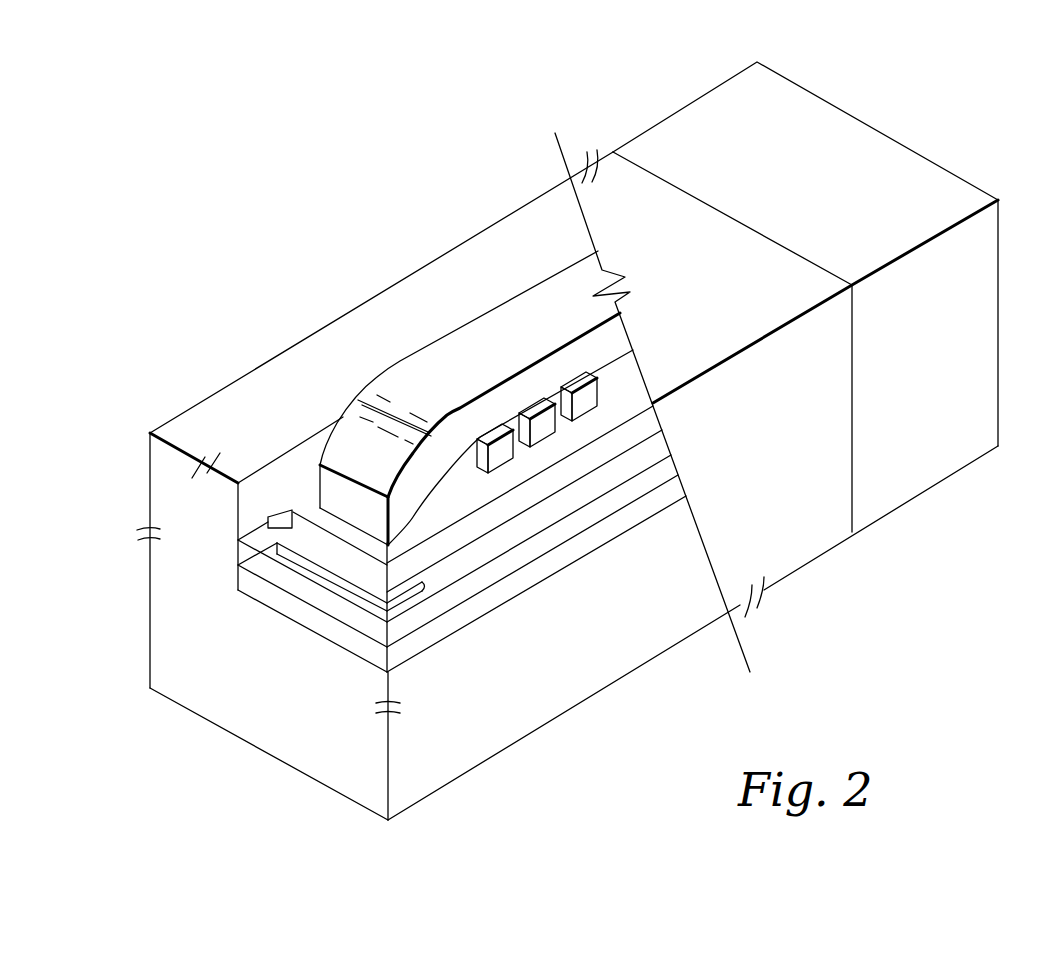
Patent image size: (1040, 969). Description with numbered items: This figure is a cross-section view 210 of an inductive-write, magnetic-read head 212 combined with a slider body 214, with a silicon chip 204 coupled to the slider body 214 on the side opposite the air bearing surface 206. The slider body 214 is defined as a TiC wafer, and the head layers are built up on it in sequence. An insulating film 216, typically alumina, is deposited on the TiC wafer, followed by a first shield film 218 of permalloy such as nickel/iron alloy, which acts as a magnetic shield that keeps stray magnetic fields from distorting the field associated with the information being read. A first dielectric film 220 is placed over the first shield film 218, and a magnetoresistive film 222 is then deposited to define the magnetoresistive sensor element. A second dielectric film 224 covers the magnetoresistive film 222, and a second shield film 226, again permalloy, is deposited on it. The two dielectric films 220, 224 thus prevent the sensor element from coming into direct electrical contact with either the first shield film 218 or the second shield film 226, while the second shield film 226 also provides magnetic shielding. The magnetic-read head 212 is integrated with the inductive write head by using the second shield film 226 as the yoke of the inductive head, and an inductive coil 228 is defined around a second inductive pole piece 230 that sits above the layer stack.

The silicon chip 204 is at (928, 469).
The air bearing surface 206 is at (292, 738).
The cross-section view 210 is at (606, 228).
The magnetic-read head 212 is at (225, 527).
The slider body 214 is at (185, 653).
The insulating film 216 is at (670, 488).
The first shield film 218 is at (662, 468).
The first dielectric film 220 is at (413, 600).
The magnetoresistive film 222 is at (290, 573).
The second dielectric film 224 is at (423, 580).
The second shield film 226 is at (647, 425).
The inductive coil 228 is at (475, 465).
The second inductive pole piece 230 is at (505, 342).